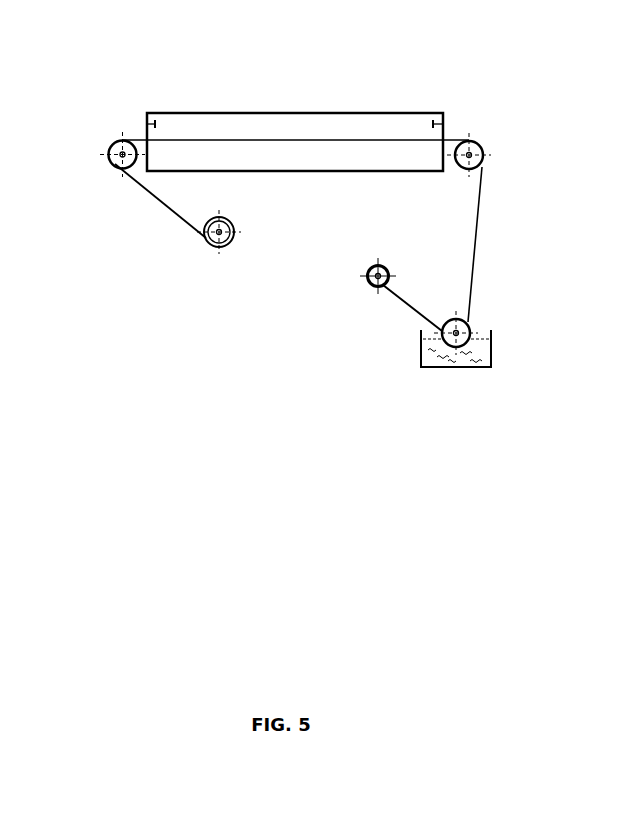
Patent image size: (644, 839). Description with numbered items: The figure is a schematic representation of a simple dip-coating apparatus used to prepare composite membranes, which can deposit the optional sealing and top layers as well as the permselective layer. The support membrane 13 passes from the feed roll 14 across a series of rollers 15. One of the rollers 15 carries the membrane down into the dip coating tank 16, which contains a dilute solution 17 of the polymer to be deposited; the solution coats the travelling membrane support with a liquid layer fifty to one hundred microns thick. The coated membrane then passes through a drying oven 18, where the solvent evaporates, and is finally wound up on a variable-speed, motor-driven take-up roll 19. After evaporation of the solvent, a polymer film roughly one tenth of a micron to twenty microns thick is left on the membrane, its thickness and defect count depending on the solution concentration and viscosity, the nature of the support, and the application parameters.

The support membrane 13 is at (387, 318).
The feed roll 14 is at (357, 257).
The rollers 15 is at (100, 132).
The dip coating tank 16 is at (432, 367).
The dilute solution 17 is at (488, 326).
The drying oven 18 is at (327, 115).
The take-up roll 19 is at (204, 256).